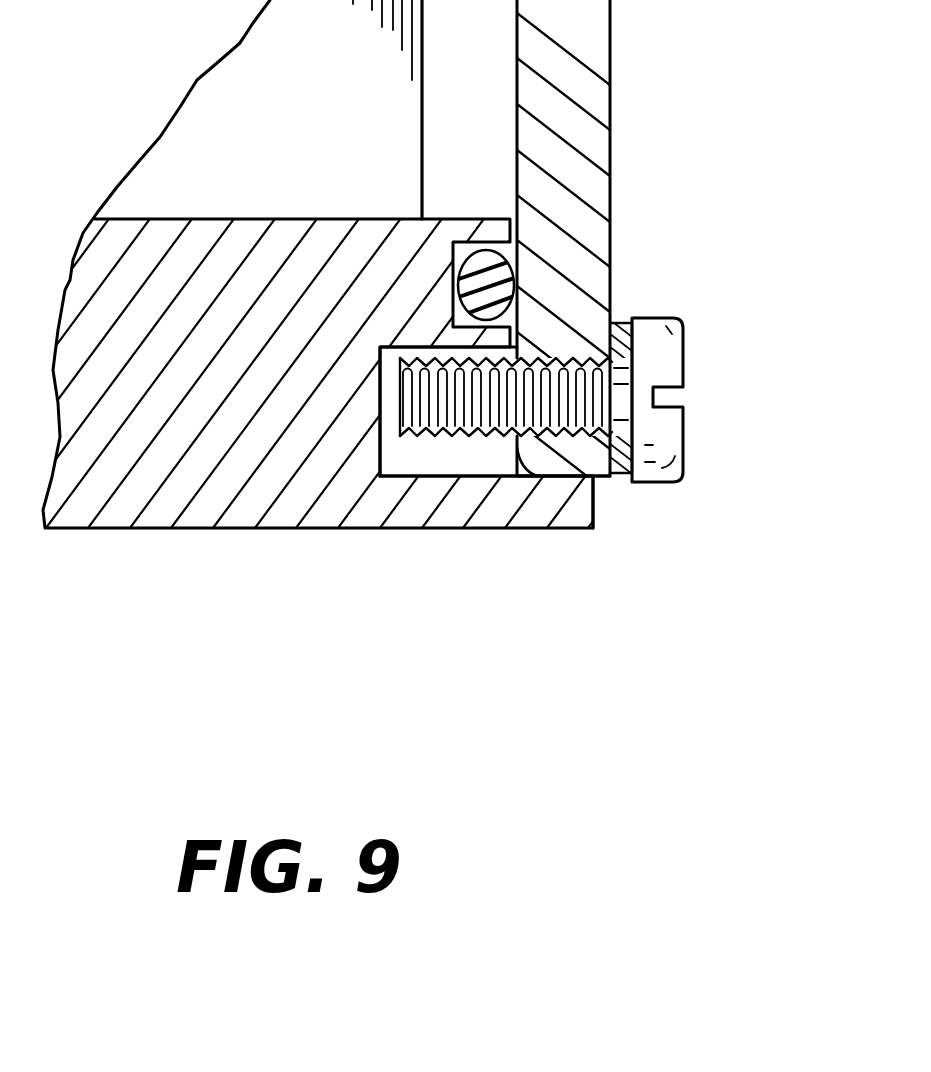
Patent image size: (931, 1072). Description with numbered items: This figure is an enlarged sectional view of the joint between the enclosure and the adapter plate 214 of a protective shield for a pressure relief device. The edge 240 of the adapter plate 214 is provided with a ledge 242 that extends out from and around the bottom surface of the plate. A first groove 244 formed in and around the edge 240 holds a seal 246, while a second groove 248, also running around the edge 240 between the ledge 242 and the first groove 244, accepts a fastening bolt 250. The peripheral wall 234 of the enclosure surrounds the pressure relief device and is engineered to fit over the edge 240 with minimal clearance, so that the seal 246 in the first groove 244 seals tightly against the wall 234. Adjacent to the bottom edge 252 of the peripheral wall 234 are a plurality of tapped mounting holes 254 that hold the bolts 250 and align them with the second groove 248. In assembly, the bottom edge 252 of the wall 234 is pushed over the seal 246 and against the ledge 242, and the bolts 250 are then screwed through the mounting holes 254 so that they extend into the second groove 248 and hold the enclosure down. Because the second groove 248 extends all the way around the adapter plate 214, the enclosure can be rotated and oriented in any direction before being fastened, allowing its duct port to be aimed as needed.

The adapter plate 214 is at (235, 530).
The peripheral wall 234 is at (614, 133).
The edge 240 is at (547, 542).
The ledge 242 is at (593, 517).
The first groove 244 is at (420, 217).
The seal 246 is at (490, 255).
The second groove 248 is at (437, 457).
The fastening bolt 250 is at (688, 371).
The bottom edge 252 is at (603, 478).
The tapped mounting holes 254 is at (592, 347).